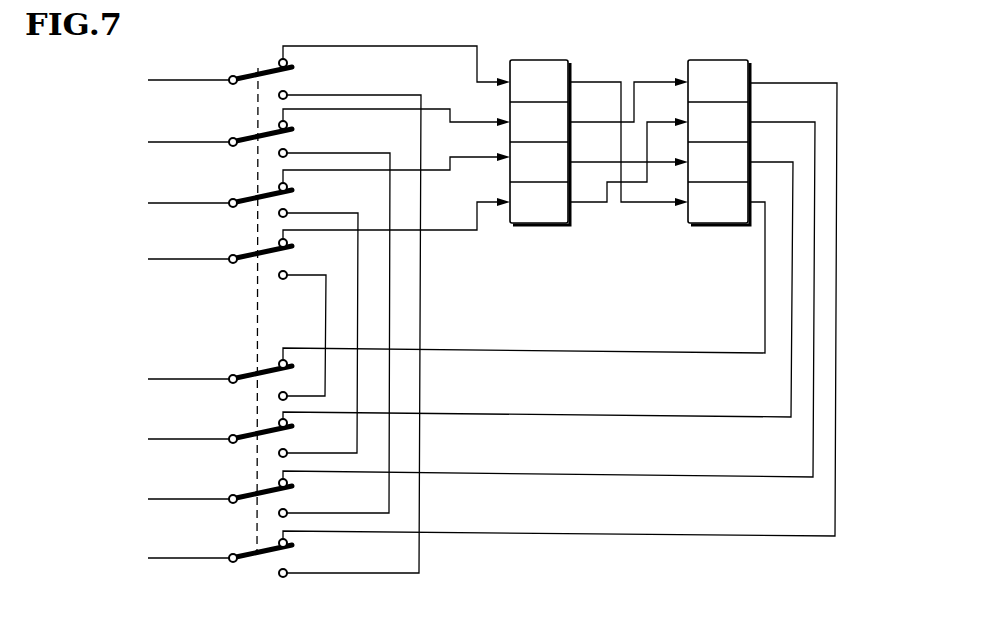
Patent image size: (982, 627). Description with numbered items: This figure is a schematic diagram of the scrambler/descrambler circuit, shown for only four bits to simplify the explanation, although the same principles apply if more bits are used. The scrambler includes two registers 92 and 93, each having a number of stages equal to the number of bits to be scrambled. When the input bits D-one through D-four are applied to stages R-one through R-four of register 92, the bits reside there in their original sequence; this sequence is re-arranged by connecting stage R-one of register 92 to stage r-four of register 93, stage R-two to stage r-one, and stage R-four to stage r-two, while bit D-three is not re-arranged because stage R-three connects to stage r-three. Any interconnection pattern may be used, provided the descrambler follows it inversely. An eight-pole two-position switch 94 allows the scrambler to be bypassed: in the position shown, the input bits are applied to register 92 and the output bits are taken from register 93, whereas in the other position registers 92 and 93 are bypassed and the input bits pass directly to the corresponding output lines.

The register 92 is at (555, 60).
The register 93 is at (740, 60).
The eight-pole two-position switch 94 is at (261, 55).